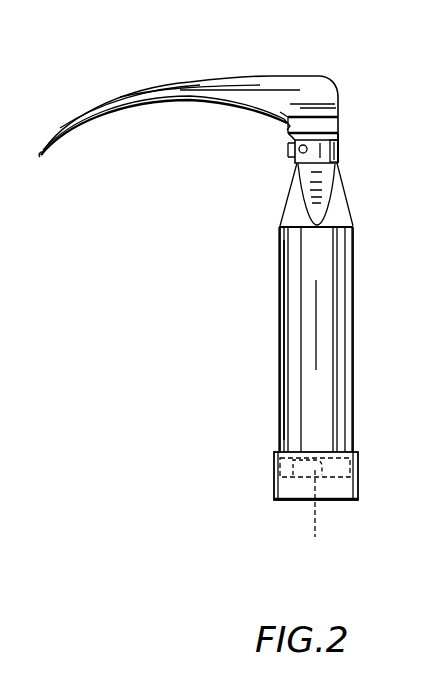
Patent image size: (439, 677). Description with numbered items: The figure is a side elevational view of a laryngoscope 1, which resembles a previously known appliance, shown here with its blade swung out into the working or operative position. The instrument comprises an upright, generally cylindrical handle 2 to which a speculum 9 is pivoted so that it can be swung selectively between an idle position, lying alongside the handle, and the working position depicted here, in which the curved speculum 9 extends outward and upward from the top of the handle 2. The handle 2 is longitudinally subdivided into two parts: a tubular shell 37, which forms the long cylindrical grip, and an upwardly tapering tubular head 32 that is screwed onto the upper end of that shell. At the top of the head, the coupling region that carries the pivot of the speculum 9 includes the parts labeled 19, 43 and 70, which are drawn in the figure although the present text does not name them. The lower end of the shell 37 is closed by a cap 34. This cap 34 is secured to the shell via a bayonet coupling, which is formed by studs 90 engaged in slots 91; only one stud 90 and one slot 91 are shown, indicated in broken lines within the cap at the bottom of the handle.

The laryngoscope 1 is at (183, 121).
The handle 2 is at (352, 344).
The speculum 9 is at (242, 77).
The blade hook 19 is at (284, 123).
The tubular head 32 is at (290, 200).
The cap 34 is at (350, 490).
The tubular shell 37 is at (285, 295).
The coupling block 43 is at (338, 137).
The latch 70 is at (340, 153).
The stud 90 is at (277, 464).
The slot 91 is at (313, 517).